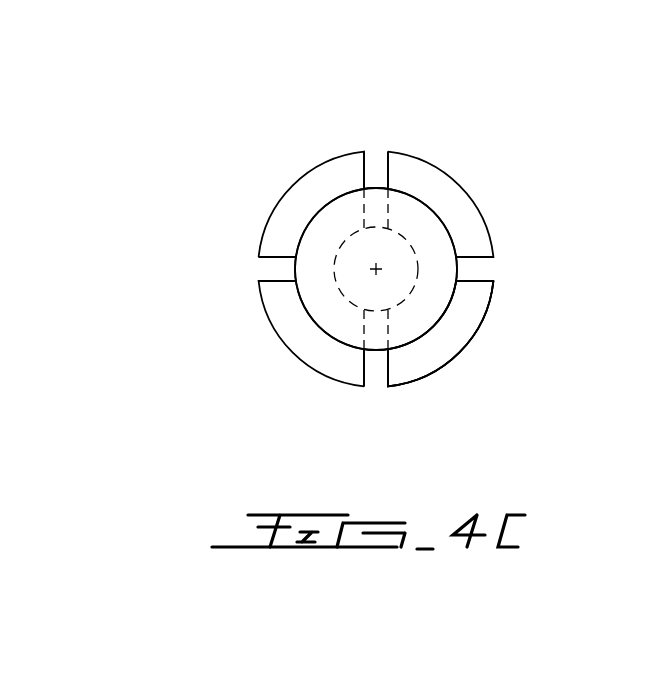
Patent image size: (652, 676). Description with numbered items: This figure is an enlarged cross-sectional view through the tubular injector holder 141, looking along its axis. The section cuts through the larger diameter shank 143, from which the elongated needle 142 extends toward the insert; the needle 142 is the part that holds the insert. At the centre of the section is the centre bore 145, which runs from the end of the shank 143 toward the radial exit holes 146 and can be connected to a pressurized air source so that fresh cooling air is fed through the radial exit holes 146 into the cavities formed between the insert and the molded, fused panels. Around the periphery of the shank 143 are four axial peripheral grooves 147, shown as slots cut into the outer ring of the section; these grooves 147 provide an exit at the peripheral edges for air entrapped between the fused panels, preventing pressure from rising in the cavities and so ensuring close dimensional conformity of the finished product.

The tubular injector holder 141 is at (460, 138).
The elongated needle 142 is at (452, 310).
The shank 143 is at (440, 350).
The centre bore 145 is at (402, 254).
The radial exit holes 146 is at (366, 337).
The axial peripheral grooves 147 is at (372, 166).